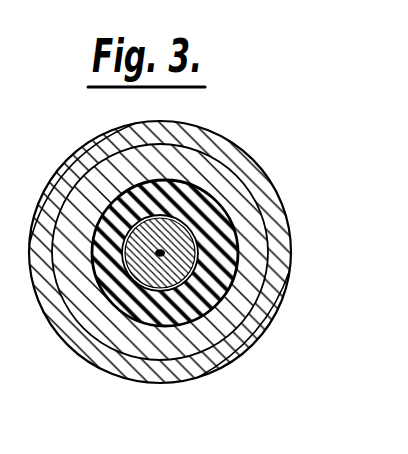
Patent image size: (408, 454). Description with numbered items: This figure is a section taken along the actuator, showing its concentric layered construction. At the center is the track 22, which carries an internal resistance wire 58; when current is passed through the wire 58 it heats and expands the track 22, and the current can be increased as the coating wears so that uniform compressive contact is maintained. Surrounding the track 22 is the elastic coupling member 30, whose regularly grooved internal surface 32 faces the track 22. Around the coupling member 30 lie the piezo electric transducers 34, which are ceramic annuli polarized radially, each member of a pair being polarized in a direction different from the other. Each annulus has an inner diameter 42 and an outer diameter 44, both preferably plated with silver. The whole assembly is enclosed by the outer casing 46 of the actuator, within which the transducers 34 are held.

The track 22 is at (130, 305).
The elastic coupling member 30 is at (228, 213).
The grooved internal surface 32 is at (67, 328).
The piezo electric transducers 34 is at (186, 370).
The inner diameter 42 is at (269, 276).
The outer diameter 44 is at (230, 163).
The outer casing 46 is at (276, 243).
The internal resistance wire 58 is at (163, 252).